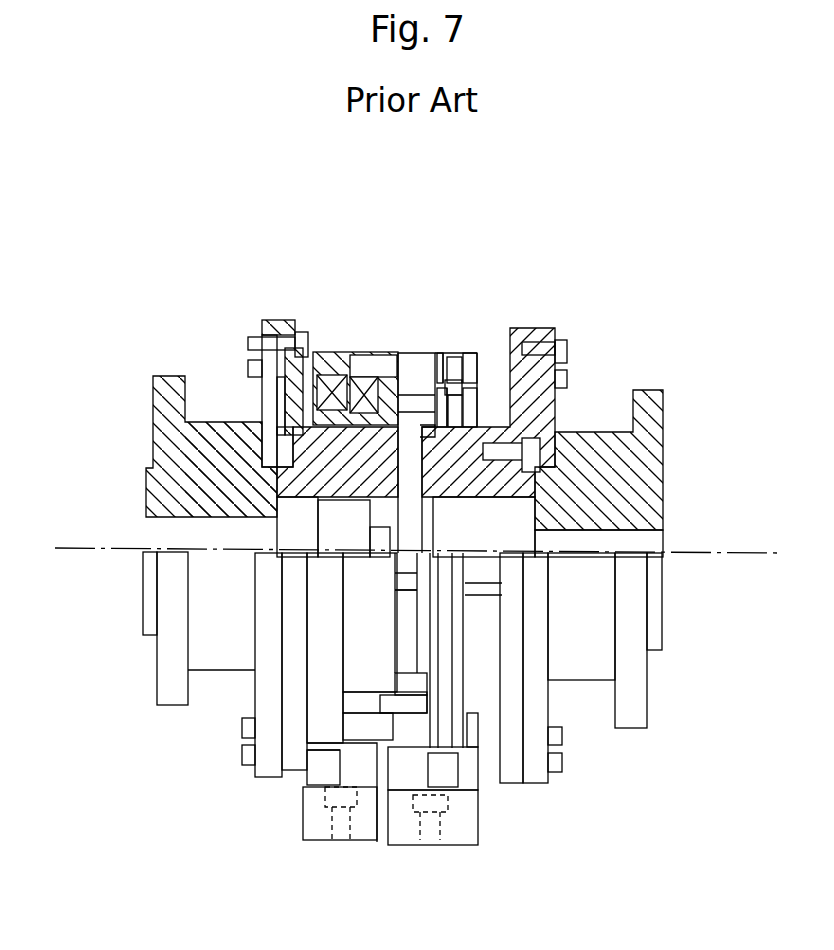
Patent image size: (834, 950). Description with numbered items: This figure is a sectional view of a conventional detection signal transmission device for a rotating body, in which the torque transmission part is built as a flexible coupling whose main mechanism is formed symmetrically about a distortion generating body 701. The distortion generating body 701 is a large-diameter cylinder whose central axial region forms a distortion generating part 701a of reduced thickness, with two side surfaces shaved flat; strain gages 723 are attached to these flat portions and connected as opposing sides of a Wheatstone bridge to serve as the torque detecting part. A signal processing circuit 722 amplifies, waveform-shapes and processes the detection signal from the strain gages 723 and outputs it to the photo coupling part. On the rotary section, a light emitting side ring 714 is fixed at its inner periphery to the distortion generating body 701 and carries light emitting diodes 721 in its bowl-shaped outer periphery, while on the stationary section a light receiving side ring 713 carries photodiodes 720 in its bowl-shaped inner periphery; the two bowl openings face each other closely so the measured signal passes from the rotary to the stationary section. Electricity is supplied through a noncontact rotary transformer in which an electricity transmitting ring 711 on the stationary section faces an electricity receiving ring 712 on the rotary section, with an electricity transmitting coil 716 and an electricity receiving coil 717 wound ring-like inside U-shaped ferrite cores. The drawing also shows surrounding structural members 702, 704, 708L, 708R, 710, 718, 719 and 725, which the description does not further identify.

The distortion generating body 701 is at (490, 473).
The distortion generating part 701a is at (410, 573).
The end plate 702 is at (283, 335).
The bearing support 704 is at (230, 415).
The left frame member 708L is at (170, 380).
The right frame member 708R is at (650, 412).
The bolt 710 is at (567, 352).
The electricity transmitting ring 711 is at (332, 350).
The electricity receiving ring 712 is at (402, 355).
The light receiving side ring 713 is at (440, 360).
The light emitting side ring 714 is at (488, 410).
The electricity transmitting coil 716 is at (325, 350).
The electricity receiving coil 717 is at (365, 375).
The lower mounting block 718 is at (362, 827).
The lower mounting block 719 is at (467, 777).
The photodiodes 720 is at (455, 350).
The light emitting diodes 721 is at (460, 345).
The signal processing circuit 722 is at (380, 530).
The strain gages 723 is at (408, 590).
The spacer 725 is at (322, 767).